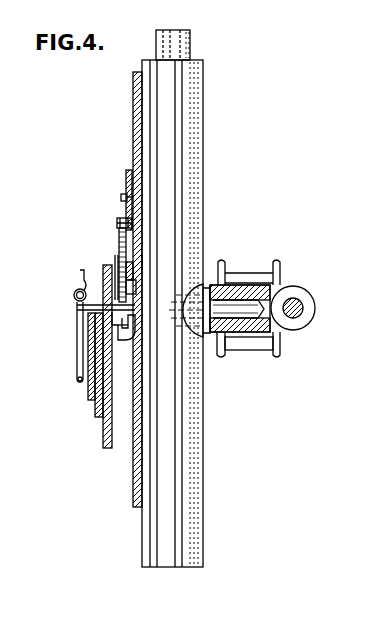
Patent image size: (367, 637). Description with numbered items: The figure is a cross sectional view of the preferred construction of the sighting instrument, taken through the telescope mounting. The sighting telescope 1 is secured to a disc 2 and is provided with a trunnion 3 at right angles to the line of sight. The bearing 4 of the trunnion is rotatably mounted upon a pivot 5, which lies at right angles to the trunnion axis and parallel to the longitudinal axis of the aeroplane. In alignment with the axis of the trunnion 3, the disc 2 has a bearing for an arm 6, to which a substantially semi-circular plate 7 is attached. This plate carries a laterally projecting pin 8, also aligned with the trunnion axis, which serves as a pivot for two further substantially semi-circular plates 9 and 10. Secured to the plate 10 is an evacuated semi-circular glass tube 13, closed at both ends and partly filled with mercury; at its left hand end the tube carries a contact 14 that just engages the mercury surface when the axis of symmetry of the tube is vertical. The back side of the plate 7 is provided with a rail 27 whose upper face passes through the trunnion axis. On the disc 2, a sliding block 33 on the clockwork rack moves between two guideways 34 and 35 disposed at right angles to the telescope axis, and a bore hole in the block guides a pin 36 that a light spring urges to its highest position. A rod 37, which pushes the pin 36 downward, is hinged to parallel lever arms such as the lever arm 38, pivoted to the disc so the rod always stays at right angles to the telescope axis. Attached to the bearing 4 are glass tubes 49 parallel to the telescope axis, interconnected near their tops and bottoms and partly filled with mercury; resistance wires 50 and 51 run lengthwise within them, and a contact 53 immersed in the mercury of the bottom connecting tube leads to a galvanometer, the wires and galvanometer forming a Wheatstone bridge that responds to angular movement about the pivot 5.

The sighting telescope 1 is at (160, 522).
The disc 2 is at (134, 487).
The trunnion 3 is at (230, 300).
The bearing 4 is at (302, 290).
The pivot 5 is at (293, 318).
The arm 6 is at (126, 342).
The semi-circular plate 7 is at (106, 448).
The laterally projecting pin 8 is at (74, 297).
The semi-circular plate 9 is at (98, 417).
The semi-circular plate 10 is at (90, 398).
The evacuated semi-circular glass tube 13 is at (77, 346).
The contact 14 is at (76, 286).
The rail 27 is at (176, 327).
The sliding block 33 is at (135, 276).
The guideway 34 is at (143, 262).
The guideway 35 is at (134, 294).
The pin 36 is at (119, 251).
The rod 37 is at (118, 223).
The lever arm 38 is at (124, 197).
The glass tube 49 is at (221, 357).
The resistance wire 50 is at (221, 262).
The resistance wire 51 is at (277, 262).
The contact 53 is at (249, 350).